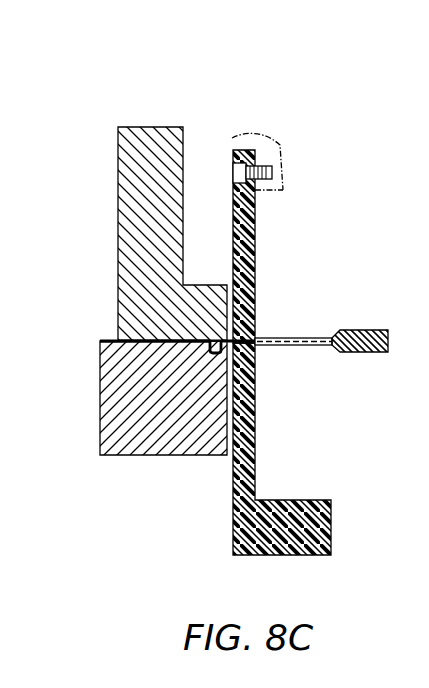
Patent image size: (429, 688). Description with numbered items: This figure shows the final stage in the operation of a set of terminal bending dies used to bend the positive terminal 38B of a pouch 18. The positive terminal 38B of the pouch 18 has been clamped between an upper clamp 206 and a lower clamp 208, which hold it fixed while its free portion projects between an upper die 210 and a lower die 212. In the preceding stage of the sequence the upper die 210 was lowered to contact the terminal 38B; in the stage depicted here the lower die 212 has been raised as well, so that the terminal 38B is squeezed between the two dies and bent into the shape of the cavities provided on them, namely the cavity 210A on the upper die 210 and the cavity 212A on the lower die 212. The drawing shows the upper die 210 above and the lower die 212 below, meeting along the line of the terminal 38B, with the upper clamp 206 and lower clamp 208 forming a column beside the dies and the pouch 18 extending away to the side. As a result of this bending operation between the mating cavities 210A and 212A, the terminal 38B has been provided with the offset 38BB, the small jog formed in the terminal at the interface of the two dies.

The upper die 210 is at (135, 258).
The lower die 212 is at (165, 440).
The upper clamp 206 is at (256, 238).
The lower clamp 208 is at (250, 462).
The pouch 18 is at (368, 330).
The positive terminal 38B is at (176, 345).
The offset 38BB is at (218, 354).
The cavity 212A is at (172, 336).
The cavity 210A is at (178, 344).